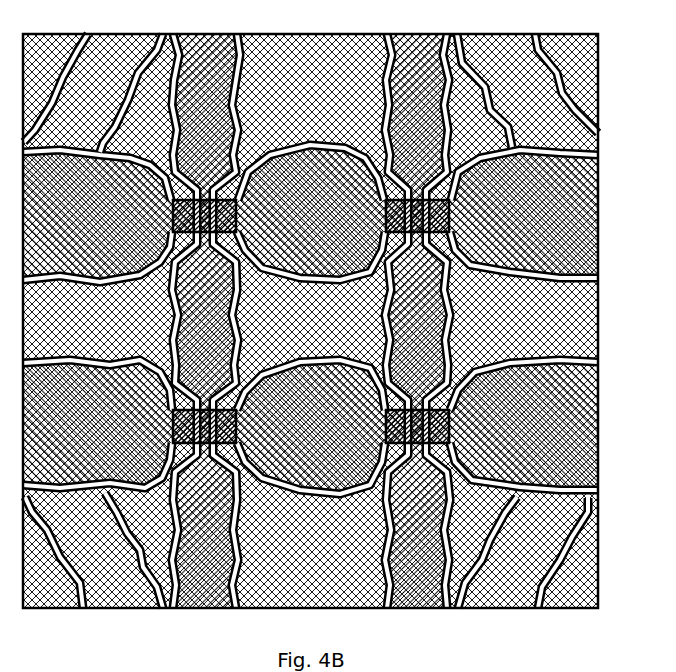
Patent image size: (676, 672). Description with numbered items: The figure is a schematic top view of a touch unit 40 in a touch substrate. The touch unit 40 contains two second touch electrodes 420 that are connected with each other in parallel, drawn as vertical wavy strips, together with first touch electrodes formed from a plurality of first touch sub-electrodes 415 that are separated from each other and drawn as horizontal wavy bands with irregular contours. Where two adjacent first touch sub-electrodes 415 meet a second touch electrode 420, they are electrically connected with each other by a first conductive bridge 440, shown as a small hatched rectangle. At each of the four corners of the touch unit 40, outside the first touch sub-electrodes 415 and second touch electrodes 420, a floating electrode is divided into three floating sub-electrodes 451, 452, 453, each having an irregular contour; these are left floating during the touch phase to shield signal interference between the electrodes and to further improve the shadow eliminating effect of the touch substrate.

The touch unit 40 is at (68, 26).
The first touch sub-electrode 415 is at (310, 319).
The second touch electrode 420 is at (311, 321).
The first conductive bridge 440 is at (311, 321).
The floating sub-electrode 451 is at (311, 321).
The floating sub-electrode 452 is at (296, 321).
The floating sub-electrode 453 is at (139, 137).